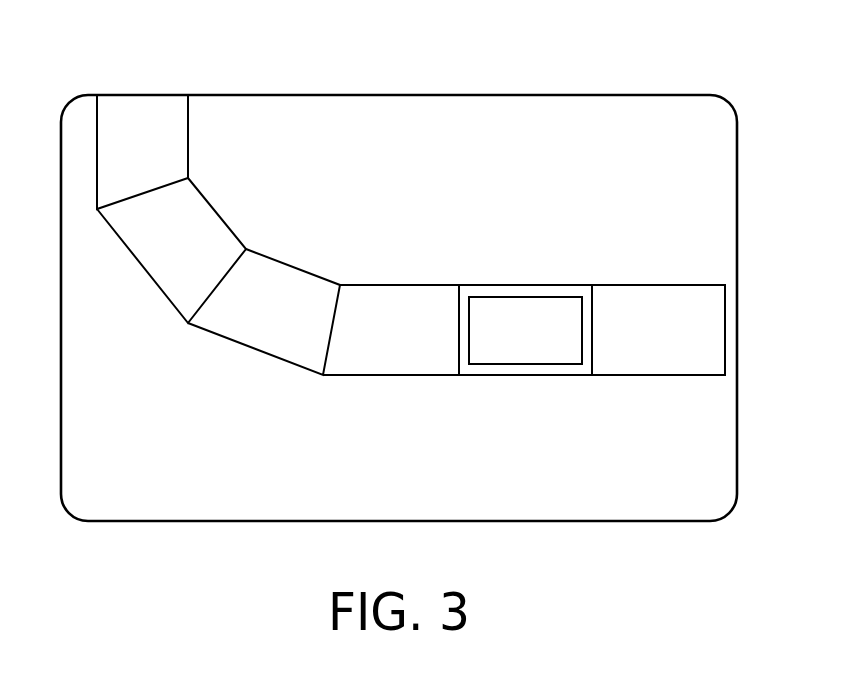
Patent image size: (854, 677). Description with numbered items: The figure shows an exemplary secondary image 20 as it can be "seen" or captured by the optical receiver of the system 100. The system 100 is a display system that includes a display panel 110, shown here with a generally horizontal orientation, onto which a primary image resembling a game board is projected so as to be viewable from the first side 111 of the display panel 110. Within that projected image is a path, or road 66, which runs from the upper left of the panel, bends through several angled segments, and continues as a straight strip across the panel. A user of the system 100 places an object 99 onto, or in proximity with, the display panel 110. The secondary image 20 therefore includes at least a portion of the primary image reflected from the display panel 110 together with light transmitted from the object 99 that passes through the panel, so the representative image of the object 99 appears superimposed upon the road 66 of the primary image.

The system 100 is at (147, 57).
The display panel 110 is at (522, 95).
The secondary image 20 is at (548, 490).
The road 66 is at (412, 284).
The object 99 is at (546, 297).
The first side 111 is at (472, 437).